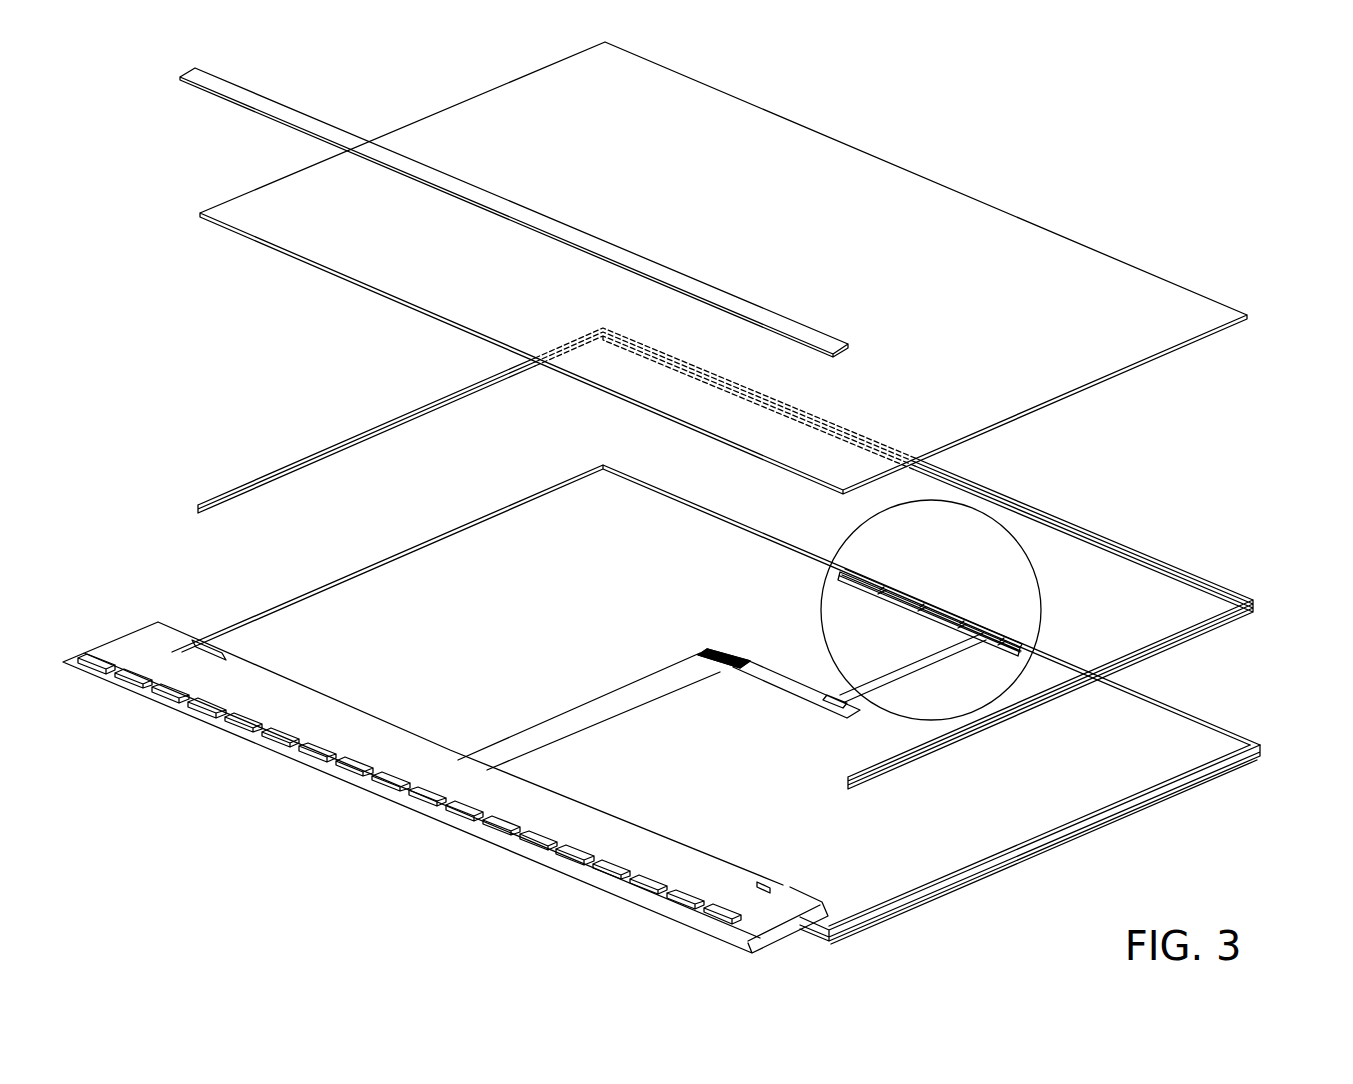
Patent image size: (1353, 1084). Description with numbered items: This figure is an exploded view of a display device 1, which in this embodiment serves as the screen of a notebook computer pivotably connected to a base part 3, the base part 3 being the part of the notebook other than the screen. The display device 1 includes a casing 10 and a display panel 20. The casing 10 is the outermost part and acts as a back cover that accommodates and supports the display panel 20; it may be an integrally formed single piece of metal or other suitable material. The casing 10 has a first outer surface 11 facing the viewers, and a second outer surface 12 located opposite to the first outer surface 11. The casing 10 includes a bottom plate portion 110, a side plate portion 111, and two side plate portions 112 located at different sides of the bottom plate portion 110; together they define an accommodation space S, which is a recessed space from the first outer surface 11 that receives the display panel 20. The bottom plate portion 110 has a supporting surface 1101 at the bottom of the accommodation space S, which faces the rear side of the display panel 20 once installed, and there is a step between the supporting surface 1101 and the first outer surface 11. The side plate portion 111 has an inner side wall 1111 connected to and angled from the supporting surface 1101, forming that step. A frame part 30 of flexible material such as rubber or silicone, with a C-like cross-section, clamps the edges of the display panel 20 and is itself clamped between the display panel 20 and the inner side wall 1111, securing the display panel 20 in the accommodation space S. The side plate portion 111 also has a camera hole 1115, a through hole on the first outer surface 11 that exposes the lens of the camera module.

The display device 1 is at (701, 497).
The base part 3 is at (153, 655).
The casing 10 is at (756, 688).
The first outer surface 11 is at (1180, 755).
The second outer surface 12 is at (1033, 858).
The display panel 20 is at (1103, 300).
The frame part 30 is at (1160, 555).
The bottom plate portion 110 is at (667, 658).
The side plate portion 111 is at (869, 590).
The side plate portions 112 is at (425, 533).
The supporting surface 1101 is at (660, 557).
The inner side wall 1111 is at (745, 530).
The camera hole 1115 is at (930, 592).
The accommodation space S is at (1147, 747).